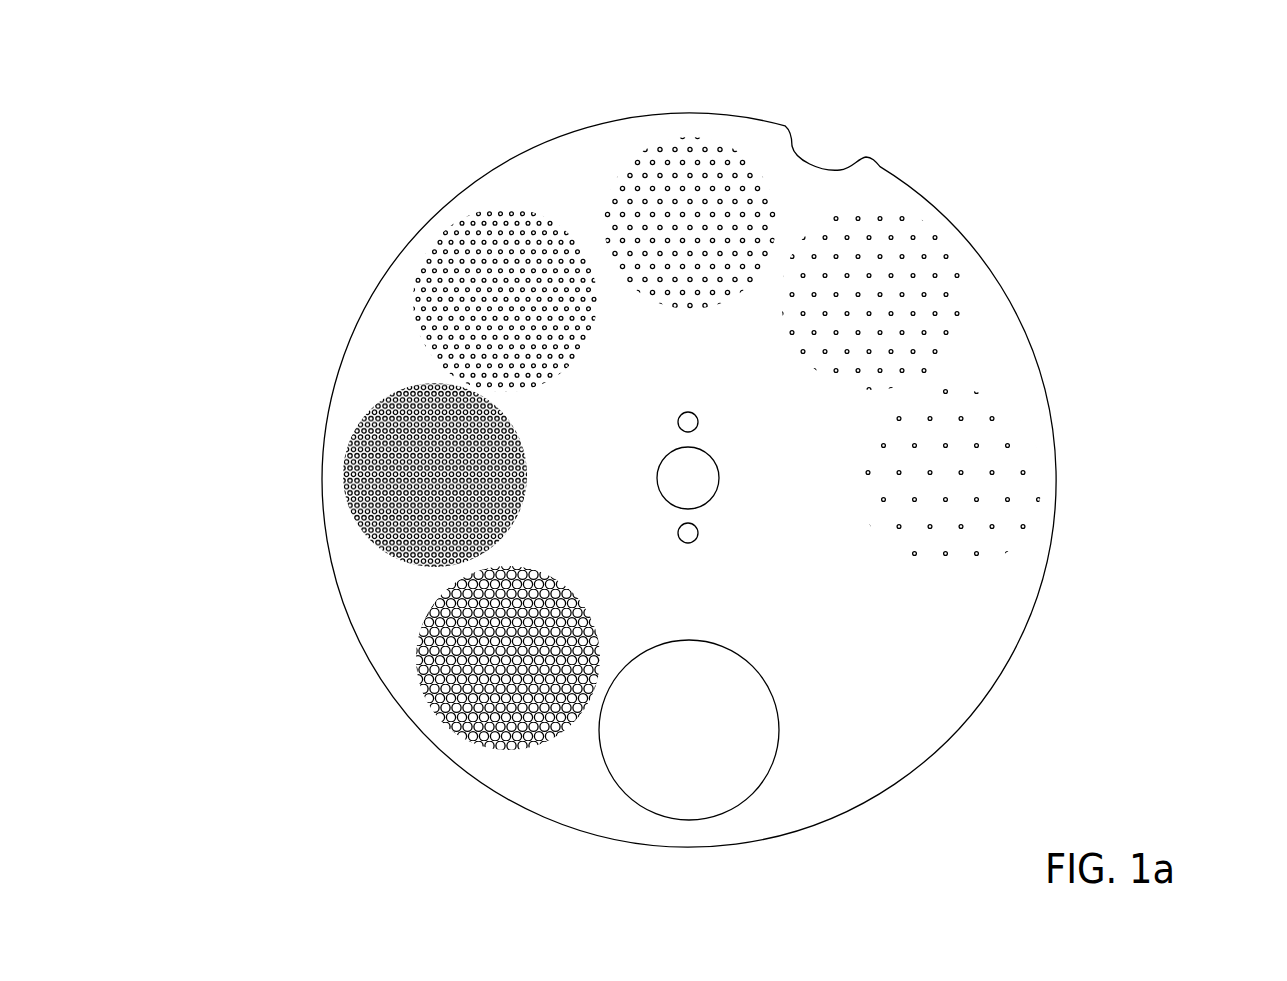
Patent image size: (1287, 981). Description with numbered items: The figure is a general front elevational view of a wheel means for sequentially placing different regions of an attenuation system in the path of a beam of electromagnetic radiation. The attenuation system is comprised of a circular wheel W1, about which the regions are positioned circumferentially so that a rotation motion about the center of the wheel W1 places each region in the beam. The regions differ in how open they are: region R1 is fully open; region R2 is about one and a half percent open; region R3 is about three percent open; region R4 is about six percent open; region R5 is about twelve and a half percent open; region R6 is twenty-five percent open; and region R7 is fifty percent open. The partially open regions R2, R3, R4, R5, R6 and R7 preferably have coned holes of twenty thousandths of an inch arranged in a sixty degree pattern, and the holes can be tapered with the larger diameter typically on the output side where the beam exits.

The circular wheel W1 is at (1010, 657).
The open region R1 is at (716, 820).
The 1.56% open region R2 is at (950, 467).
The 3.13% open region R3 is at (875, 290).
The 6.25% open region R4 is at (690, 215).
The 12.5% open region R5 is at (500, 295).
The 25% open region R6 is at (430, 460).
The 50% open region R7 is at (490, 672).